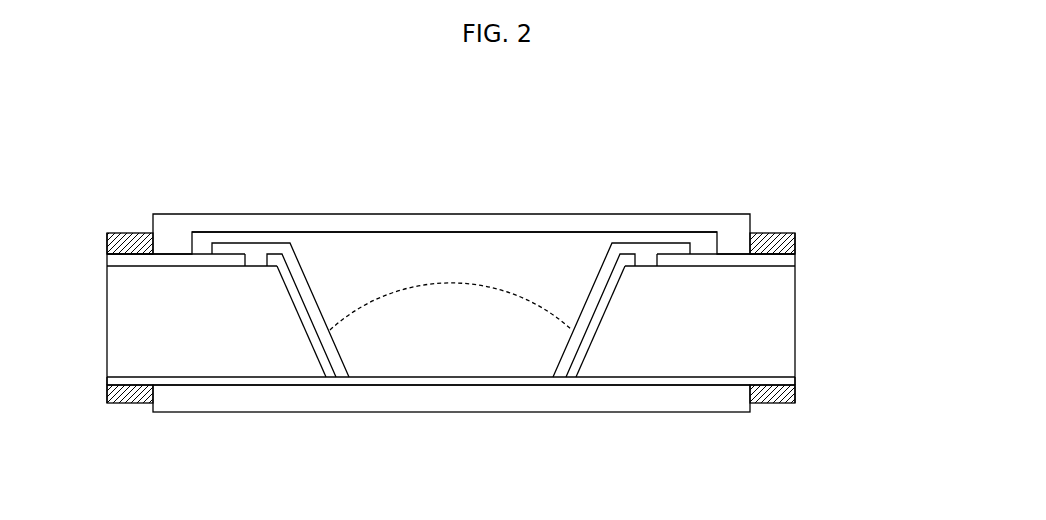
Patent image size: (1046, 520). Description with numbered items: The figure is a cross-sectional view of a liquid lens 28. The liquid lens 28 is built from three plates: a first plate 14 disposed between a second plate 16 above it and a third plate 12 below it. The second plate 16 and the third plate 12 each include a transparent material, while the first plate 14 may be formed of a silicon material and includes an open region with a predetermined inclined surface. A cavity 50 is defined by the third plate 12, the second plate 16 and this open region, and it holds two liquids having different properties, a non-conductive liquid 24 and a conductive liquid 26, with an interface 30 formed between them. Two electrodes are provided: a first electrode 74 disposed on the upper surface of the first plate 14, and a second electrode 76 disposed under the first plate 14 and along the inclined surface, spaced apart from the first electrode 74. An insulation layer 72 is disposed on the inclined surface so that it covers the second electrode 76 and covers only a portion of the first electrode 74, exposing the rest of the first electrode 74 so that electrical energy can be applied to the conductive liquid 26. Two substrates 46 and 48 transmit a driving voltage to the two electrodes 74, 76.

The third plate 12 is at (451, 415).
The first plate 14 is at (799, 322).
The second plate 16 is at (453, 212).
The non-conductive liquid 24 is at (417, 348).
The conductive liquid 26 is at (407, 258).
The liquid lens 28 is at (624, 115).
The interface 30 is at (502, 288).
The substrate 46 is at (771, 229).
The substrate 48 is at (774, 406).
The cavity 50 is at (522, 379).
The insulation layer 72 is at (299, 243).
The first electrode 74 is at (798, 257).
The second electrode 76 is at (799, 380).